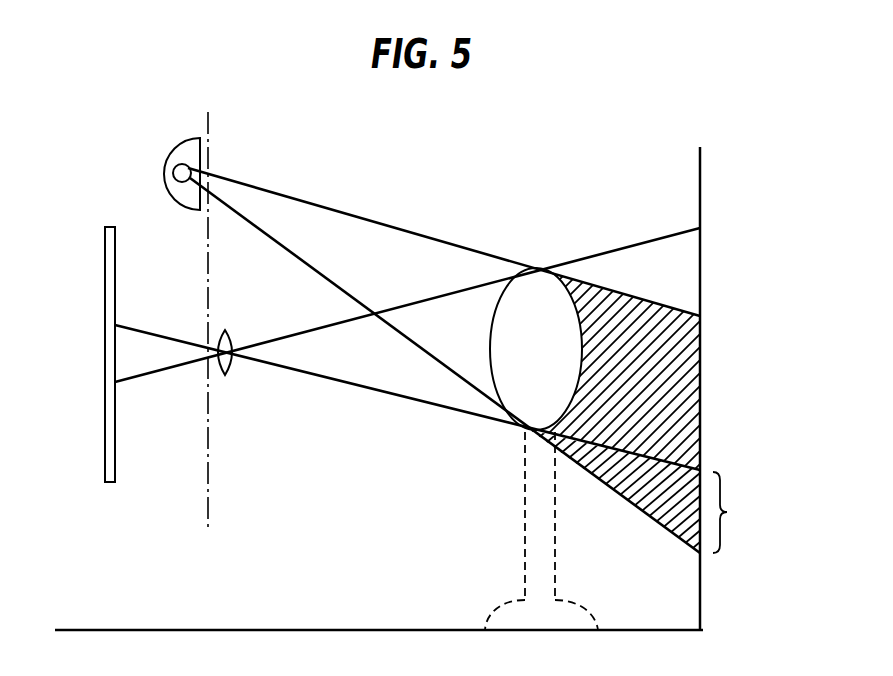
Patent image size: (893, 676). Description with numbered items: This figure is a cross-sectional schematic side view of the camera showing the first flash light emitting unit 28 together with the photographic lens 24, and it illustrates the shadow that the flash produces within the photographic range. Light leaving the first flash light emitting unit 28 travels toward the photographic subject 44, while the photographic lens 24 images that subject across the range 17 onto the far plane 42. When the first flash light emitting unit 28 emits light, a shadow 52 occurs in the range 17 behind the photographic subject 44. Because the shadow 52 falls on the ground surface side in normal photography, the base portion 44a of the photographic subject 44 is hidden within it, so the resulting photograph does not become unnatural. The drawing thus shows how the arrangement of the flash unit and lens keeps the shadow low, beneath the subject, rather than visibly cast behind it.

The first flash light emitting unit 28 is at (152, 169).
The photographic lens 24 is at (229, 371).
The photographic subject 44 is at (537, 290).
The base portion 44a is at (536, 562).
The screen 42 is at (701, 186).
The shadow 52 is at (652, 502).
The range 17 is at (744, 512).